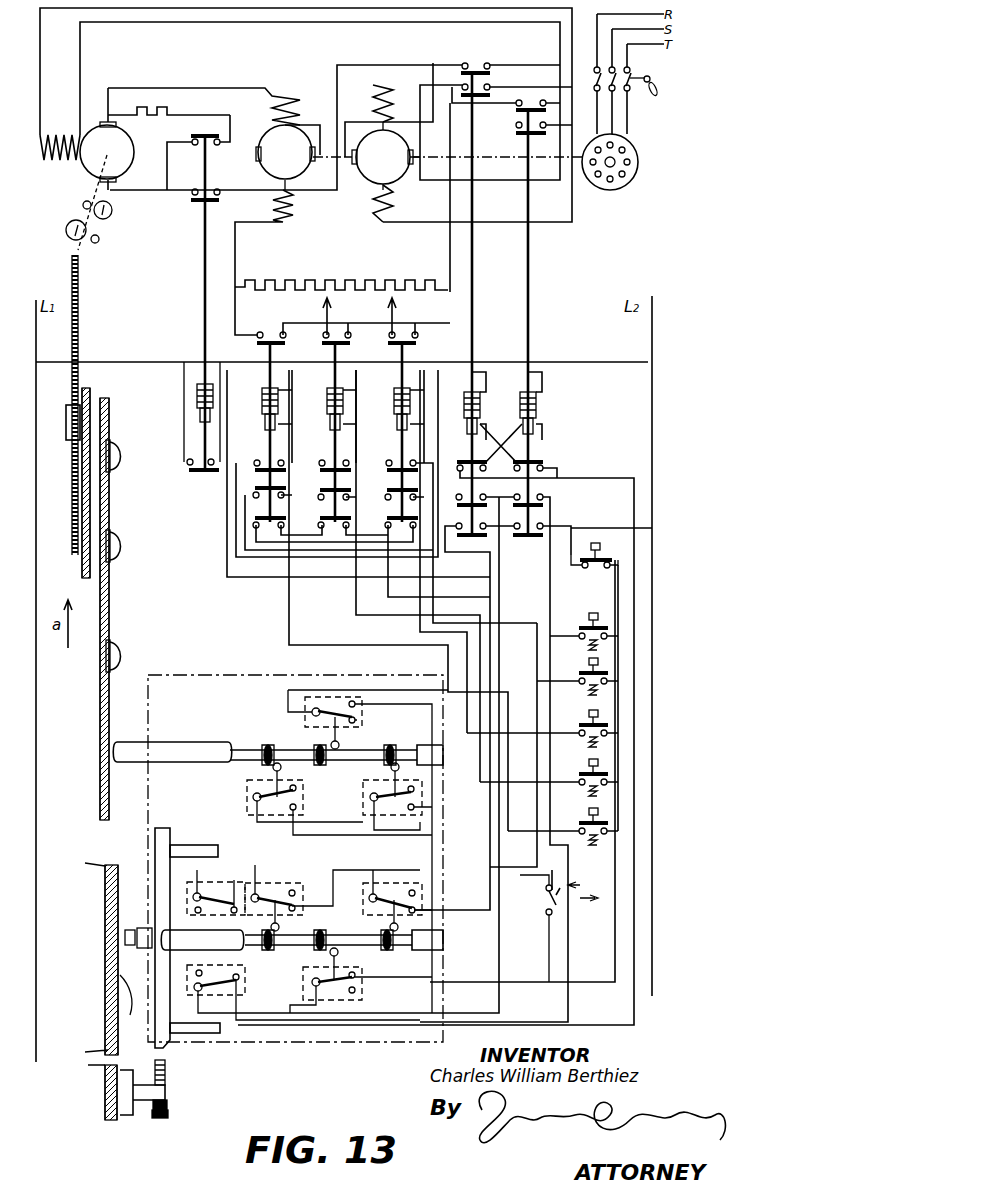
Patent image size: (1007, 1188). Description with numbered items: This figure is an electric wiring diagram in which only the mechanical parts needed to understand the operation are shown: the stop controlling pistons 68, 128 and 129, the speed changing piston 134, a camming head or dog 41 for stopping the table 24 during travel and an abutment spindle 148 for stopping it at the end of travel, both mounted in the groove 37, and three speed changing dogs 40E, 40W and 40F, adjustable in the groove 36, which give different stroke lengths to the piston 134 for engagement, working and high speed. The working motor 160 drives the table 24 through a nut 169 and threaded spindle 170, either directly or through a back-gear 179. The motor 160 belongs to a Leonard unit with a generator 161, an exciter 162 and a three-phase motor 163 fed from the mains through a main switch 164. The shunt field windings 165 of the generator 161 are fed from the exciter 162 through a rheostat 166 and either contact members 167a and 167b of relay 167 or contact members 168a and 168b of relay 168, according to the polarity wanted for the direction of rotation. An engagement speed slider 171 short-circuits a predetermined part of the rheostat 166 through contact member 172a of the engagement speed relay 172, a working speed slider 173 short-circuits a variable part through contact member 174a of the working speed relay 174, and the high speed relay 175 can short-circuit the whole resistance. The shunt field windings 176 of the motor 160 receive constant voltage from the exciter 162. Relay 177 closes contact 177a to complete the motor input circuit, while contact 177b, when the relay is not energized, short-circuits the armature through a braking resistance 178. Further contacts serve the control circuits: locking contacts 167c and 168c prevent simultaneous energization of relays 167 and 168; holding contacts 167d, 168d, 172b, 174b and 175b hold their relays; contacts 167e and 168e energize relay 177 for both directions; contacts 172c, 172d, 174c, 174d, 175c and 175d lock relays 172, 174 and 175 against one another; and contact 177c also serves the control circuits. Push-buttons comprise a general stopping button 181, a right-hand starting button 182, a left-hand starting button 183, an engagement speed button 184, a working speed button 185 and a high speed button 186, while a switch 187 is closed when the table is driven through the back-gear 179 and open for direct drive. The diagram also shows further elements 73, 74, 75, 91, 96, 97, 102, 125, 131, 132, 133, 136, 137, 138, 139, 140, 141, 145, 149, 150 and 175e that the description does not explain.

The shunt field windings 176 is at (60, 156).
The working motor 160 is at (107, 152).
The braking resistance 178 is at (169, 102).
The contact 177b is at (202, 130).
The contact 177a is at (187, 201).
The generator 161 is at (285, 157).
The shunt field windings 165 is at (279, 238).
The exciter 162 is at (382, 156).
The three phase motor 163 is at (624, 162).
The main switch 164 is at (628, 74).
The back-gear 179 is at (99, 202).
The threaded spindle 170 is at (80, 342).
The nut 169 is at (68, 438).
The speed changing camming head 40E is at (130, 455).
The speed changing camming head 40W is at (130, 548).
The speed changing camming head 40F is at (125, 655).
The table 24 is at (96, 513).
The groove 36 is at (106, 793).
The groove 37 is at (120, 911).
The rheostat 166 is at (341, 275).
The working speed slider 173 is at (341, 313).
The engagement speed slider 171 is at (405, 313).
The relay 177 is at (211, 303).
The contact member 177c is at (205, 475).
The electrical locking contact 175d is at (255, 342).
The high speed relay 175 is at (285, 432).
The holding contact 175b is at (260, 457).
The electrical locking contact 175c is at (260, 485).
The contact 175e is at (258, 512).
The contact member 174a is at (350, 346).
The working speed relay 174 is at (350, 432).
The holding contact 174b is at (327, 457).
The electrical locking contact 174c is at (326, 486).
The electrical locking contact 174d is at (323, 512).
The contact member 172a is at (420, 346).
The engagement speed relay 172 is at (417, 432).
The holding contact 172b is at (393, 457).
The electrical locking contact 172c is at (393, 486).
The electrical locking contact 172d is at (392, 512).
The contact member 168b is at (494, 72).
The contact member 168a is at (493, 93).
The contact member 167b is at (515, 110).
The contact member 167a is at (513, 133).
The relay 168 is at (486, 304).
The relay 167 is at (543, 323).
The locking contact member 168c is at (461, 457).
The locking contact member 167c is at (539, 457).
The holding contact 168d is at (463, 491).
The holding contact 167d is at (538, 491).
The contact member 168e is at (468, 537).
The contact member 167e is at (524, 537).
The general stopping button 181 is at (600, 551).
The starting button 182 is at (584, 628).
The starting button 183 is at (577, 673).
The engagement speed button 184 is at (542, 725).
The working speed button 185 is at (549, 774).
The high speed button 186 is at (563, 823).
The switch 187 is at (557, 926).
The speed changing piston 134 is at (172, 748).
The cam 136 is at (268, 745).
The cam 137 is at (322, 748).
The cam 138 is at (392, 742).
The switch 140 is at (368, 851).
The switch 139 is at (339, 807).
The switch 141 is at (397, 805).
The cam shaft 125 is at (175, 942).
The stop controlling piston 68 is at (146, 930).
The cam 73 is at (268, 952).
The cam 74 is at (318, 950).
The cam 75 is at (388, 952).
The switch 97 is at (216, 892).
The switch 96 is at (332, 890).
The switch 91 is at (397, 892).
The switch 133 is at (303, 992).
The switch 102 is at (361, 990).
The stop controlling piston 129 is at (165, 838).
The arm 131 is at (210, 845).
The arm 132 is at (220, 1028).
The camming head 41 is at (129, 1016).
The stop controlling piston 128 is at (165, 1043).
The abutment spindle 148 is at (165, 1078).
The bracket 145 is at (165, 1092).
The nut 150 is at (167, 1105).
The nut 149 is at (175, 1118).